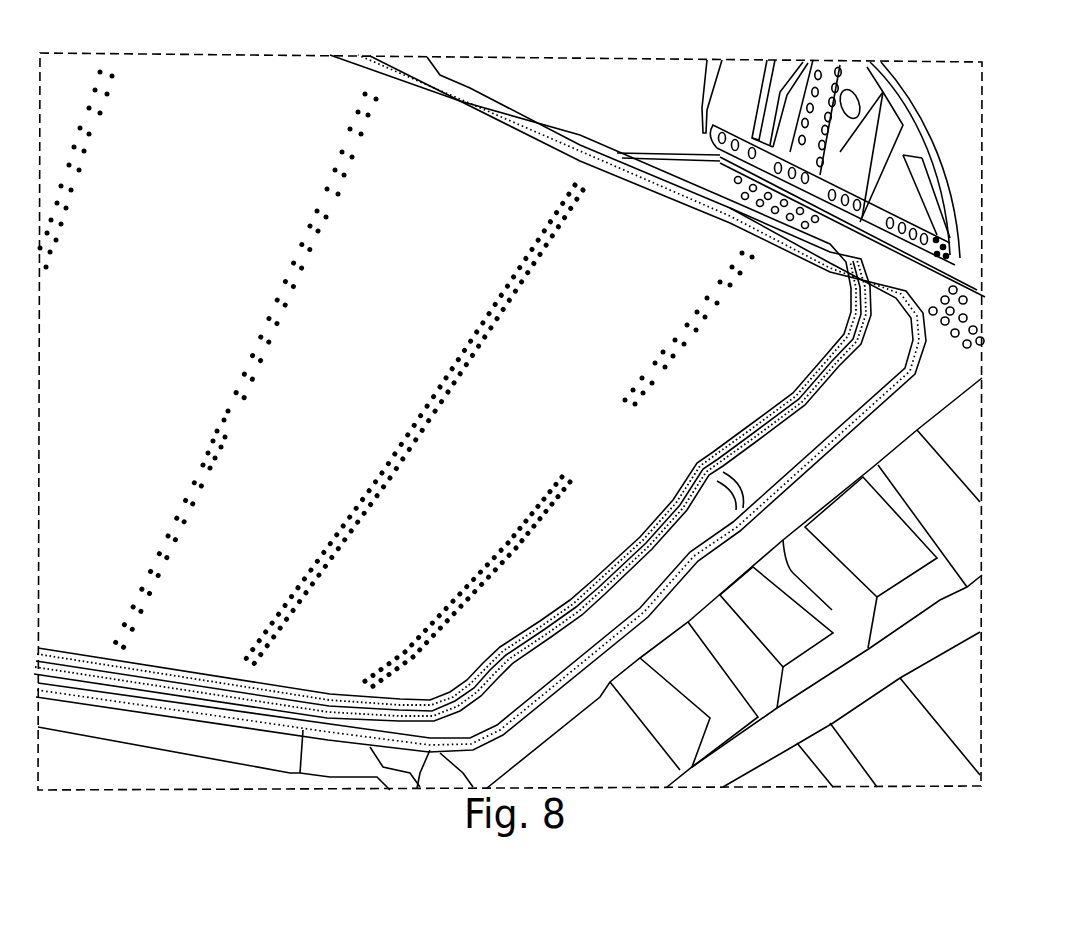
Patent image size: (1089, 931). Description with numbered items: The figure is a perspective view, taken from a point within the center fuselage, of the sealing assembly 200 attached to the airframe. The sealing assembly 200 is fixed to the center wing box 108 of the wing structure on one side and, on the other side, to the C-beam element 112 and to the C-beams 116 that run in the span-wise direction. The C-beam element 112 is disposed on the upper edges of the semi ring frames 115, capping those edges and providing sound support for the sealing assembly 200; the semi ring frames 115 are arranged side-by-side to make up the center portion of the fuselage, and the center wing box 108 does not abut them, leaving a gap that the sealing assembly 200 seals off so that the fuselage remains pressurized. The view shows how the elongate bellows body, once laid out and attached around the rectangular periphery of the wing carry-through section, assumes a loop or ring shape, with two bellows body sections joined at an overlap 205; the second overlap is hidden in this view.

The center wing box 108 is at (393, 306).
The sealing assembly 200 is at (826, 402).
The overlap 205 is at (712, 494).
The C-beam element 112 is at (922, 383).
The semi ring frames 115 is at (957, 558).
The C-beams 116 is at (138, 727).